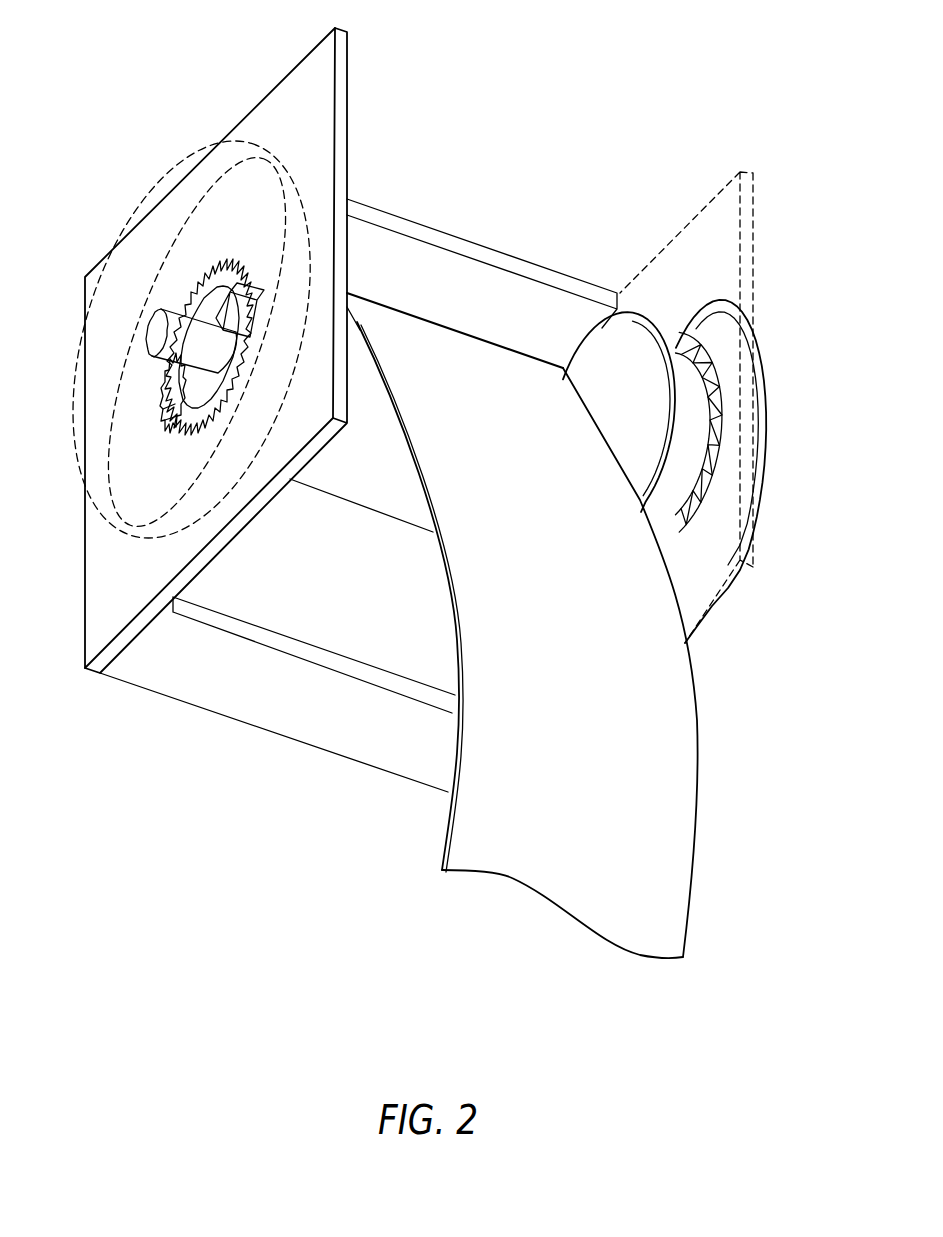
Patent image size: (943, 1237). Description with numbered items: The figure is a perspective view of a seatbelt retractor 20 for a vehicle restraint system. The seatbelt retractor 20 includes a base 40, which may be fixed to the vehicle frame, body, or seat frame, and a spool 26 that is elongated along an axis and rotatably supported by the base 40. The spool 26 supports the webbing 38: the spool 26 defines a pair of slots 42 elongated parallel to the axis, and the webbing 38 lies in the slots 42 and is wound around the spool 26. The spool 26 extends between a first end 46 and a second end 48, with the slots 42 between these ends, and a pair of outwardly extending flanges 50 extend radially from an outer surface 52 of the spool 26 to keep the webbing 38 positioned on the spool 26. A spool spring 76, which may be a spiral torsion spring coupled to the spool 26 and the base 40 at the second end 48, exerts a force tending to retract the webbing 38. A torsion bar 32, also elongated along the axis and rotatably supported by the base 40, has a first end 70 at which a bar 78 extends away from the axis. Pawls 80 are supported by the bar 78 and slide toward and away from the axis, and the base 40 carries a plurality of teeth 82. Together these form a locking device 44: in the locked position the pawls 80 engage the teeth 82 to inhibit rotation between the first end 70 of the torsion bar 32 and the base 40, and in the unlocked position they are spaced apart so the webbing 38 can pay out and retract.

The seatbelt retractor 20 is at (503, 96).
The spool 26 is at (595, 392).
The torsion bar 32 is at (182, 352).
The webbing 38 is at (515, 838).
The base 40 is at (294, 102).
The slots 42 is at (350, 307).
The locking device 44 is at (126, 284).
The first end 46 is at (290, 480).
The second end 48 is at (616, 396).
The flanges 50 is at (650, 373).
The outer surface 52 is at (398, 488).
The first end 70 is at (210, 340).
The spool spring 76 is at (768, 418).
The bar 78 is at (170, 376).
The pawls 80 is at (213, 287).
The teeth 82 is at (162, 422).